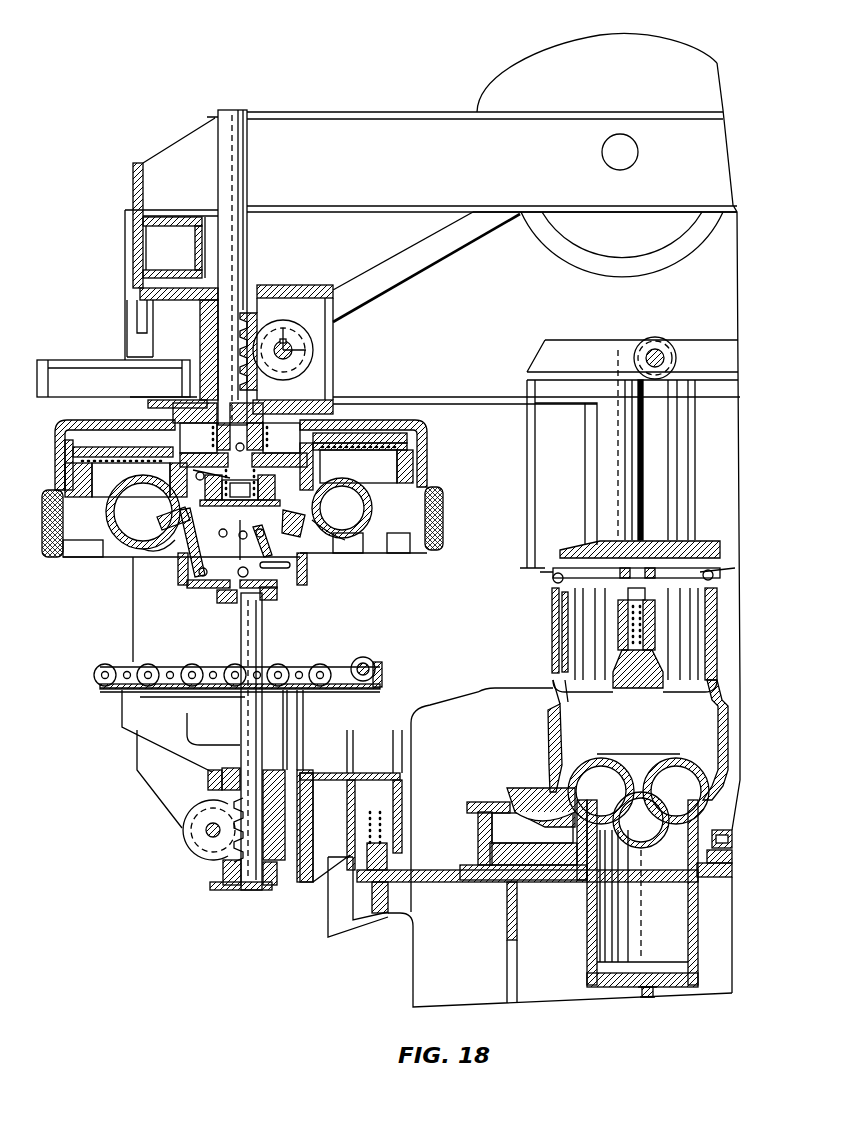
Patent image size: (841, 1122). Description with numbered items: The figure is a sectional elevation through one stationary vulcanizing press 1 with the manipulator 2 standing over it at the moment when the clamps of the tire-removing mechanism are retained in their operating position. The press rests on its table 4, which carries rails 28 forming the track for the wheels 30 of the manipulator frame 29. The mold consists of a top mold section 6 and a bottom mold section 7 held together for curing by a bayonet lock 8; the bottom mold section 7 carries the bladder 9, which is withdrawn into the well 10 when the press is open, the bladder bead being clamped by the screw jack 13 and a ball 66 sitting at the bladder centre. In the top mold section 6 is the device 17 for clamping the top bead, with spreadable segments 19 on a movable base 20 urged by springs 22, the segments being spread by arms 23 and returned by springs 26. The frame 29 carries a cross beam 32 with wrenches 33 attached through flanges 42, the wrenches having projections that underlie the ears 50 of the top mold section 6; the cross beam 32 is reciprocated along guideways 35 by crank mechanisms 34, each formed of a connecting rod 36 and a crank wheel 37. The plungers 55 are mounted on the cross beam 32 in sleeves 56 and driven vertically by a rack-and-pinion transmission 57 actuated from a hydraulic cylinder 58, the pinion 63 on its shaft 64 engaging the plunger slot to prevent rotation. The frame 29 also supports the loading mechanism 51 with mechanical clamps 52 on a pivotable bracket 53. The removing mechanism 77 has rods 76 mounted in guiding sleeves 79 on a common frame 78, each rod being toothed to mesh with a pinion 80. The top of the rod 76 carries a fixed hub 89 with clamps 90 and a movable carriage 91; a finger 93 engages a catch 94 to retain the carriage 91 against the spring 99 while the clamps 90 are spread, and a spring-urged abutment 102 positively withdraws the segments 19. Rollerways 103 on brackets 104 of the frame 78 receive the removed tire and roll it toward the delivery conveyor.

The vulcanizing press 1 is at (385, 967).
The manipulator 2 is at (148, 142).
The table 4 is at (415, 985).
The top mold section 6 is at (427, 482).
The bottom mold section 7 is at (470, 803).
The bayonet lock 8 is at (425, 550).
The bladder 9 is at (672, 756).
The well 10 is at (698, 908).
The screw jack 13 is at (657, 996).
The device for clamping the top bead 17 is at (311, 500).
The spreadable segments 19 is at (157, 530).
The movable base 20 is at (300, 511).
The springs 22 is at (281, 438).
The arms 23 is at (170, 499).
The springs 26 is at (198, 438).
The rails 28 is at (388, 893).
The frame 29 is at (335, 125).
The wheels 30 is at (400, 842).
The cross beam 32 is at (140, 293).
The wrenches 33 is at (57, 464).
The crank mechanisms 34 is at (530, 237).
The guideways 35 is at (590, 497).
The connecting rod 36 is at (410, 277).
The crank wheel 37 is at (670, 238).
The flanges 42 is at (320, 390).
The ears 50 is at (427, 440).
The mechanism for loading green tires 51 is at (722, 638).
The mechanical clamps 52 is at (554, 639).
The pivotable bracket 53 is at (703, 352).
The plungers 55 is at (223, 192).
The sleeves 56 is at (250, 287).
The rack-and-pinion transmission 57 is at (346, 351).
The hydraulic cylinder 58 is at (72, 368).
The pinion 63 is at (352, 349).
The shaft 64 is at (294, 357).
The ball 66 is at (643, 842).
The rods 76 is at (254, 650).
The mechanism for removing cured tires 77 is at (110, 708).
The frame 78 is at (215, 870).
The guiding sleeves 79 is at (233, 887).
The pinion 80 is at (205, 843).
The hub 89 is at (188, 590).
The clamps 90 is at (177, 557).
The carriage 91 is at (303, 571).
The finger 93 is at (217, 590).
The catch 94 is at (238, 598).
The spring 99 is at (284, 576).
The spring-urged abutment 102 is at (179, 578).
The rollerways 103 is at (105, 661).
The brackets 104 is at (147, 722).